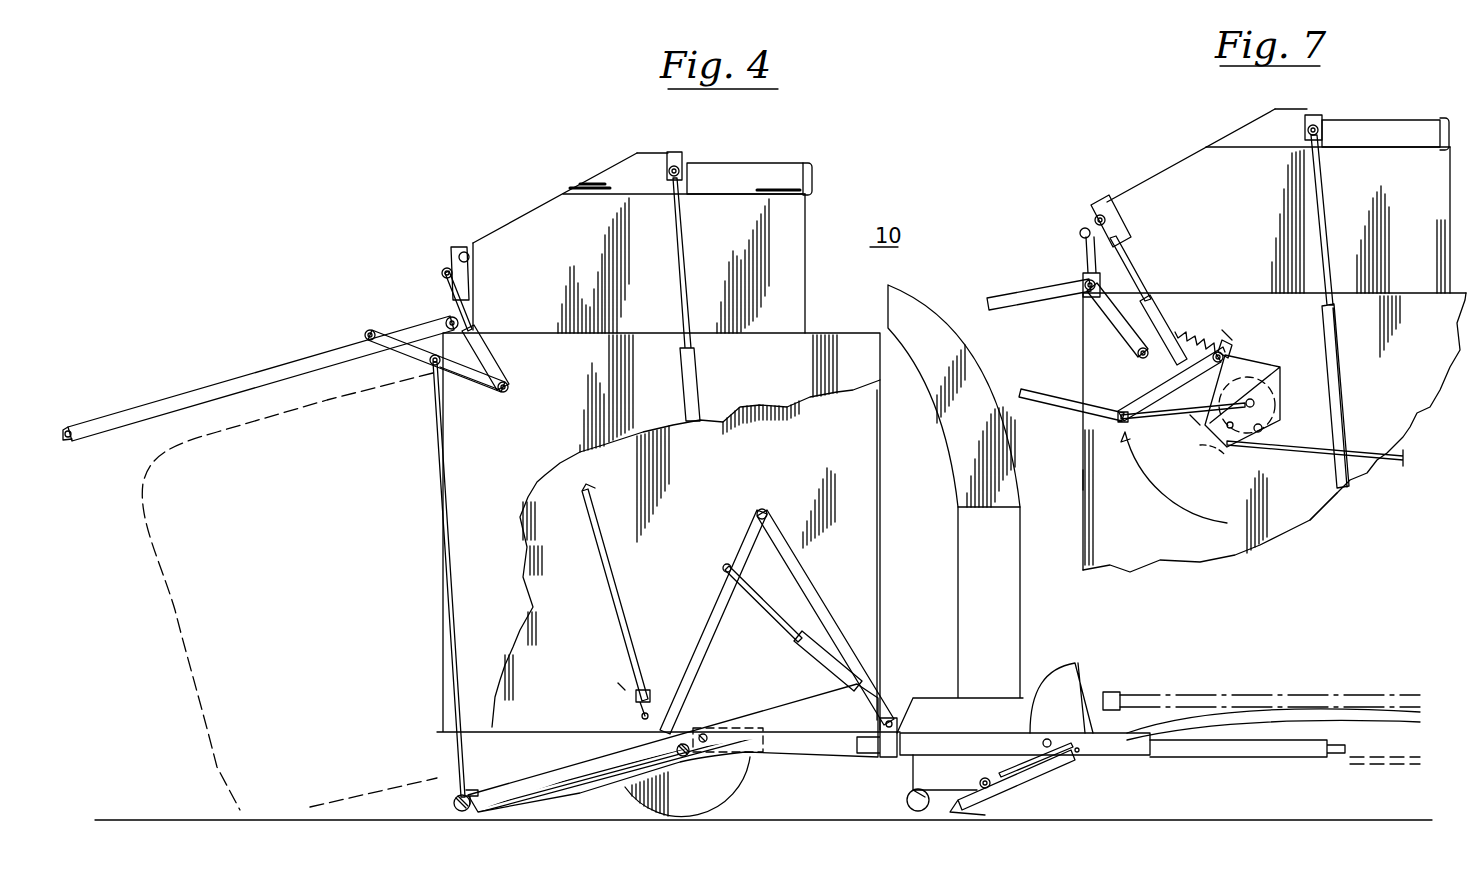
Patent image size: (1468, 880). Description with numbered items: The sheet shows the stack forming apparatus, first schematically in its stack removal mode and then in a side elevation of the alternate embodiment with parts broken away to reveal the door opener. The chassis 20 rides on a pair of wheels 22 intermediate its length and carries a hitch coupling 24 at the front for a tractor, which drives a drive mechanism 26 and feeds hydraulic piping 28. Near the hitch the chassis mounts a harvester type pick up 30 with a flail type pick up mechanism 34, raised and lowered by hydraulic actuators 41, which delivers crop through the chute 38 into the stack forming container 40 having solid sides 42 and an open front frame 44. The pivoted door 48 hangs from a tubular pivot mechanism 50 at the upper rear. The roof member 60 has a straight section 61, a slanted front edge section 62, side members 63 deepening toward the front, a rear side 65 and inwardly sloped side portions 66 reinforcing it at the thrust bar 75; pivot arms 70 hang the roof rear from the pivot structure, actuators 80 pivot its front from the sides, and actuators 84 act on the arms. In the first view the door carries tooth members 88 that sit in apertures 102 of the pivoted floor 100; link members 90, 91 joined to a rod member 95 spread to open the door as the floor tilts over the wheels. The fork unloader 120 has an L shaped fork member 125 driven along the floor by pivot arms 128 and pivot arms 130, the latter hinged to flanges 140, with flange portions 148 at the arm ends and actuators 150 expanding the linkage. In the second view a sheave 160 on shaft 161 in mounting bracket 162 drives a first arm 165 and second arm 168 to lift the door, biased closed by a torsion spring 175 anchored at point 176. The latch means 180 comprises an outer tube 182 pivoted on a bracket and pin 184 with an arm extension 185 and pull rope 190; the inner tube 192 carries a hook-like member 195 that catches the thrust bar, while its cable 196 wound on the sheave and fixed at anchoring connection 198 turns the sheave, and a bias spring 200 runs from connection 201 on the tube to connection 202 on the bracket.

In FIG. 4, the chassis 20 is at (1125, 755).
In FIG. 4, the wheels 22 is at (735, 780).
In FIG. 4, the hitch coupling 24 is at (1355, 748).
In FIG. 4, the drive mechanism 26 is at (1063, 680).
In FIG. 4, the piping 28 is at (1310, 710).
In FIG. 4, the harvester type pick up 30 is at (910, 776).
In FIG. 4, the flail type pick up mechanism 34 is at (1010, 800).
In FIG. 4, the chute 38 is at (1023, 610).
In FIG. 4, the stack forming container 40 is at (408, 637).
In FIG. 7, the stack forming container 40 is at (1072, 493).
In FIG. 4, the hydraulic actuators 41 is at (1055, 768).
In FIG. 4, the sides 42 is at (585, 452).
In FIG. 7, the sides 42 is at (1380, 412).
In FIG. 4, the open front frame 44 is at (888, 470).
In FIG. 4, the pivoted door 48 is at (272, 368).
In FIG. 7, the pivoted door 48 is at (1020, 285).
In FIG. 4, the tubular pivot mechanism 50 is at (447, 322).
In FIG. 7, the tubular pivot mechanism 50 is at (1085, 290).
In FIG. 4, the roof member 60 is at (560, 178).
In FIG. 7, the roof member 60 is at (1183, 140).
In FIG. 4, the straight section 61 is at (528, 210).
In FIG. 7, the straight section 61 is at (1170, 165).
In FIG. 4, the slanted front edge section 62 is at (745, 165).
In FIG. 7, the slanted front edge section 62 is at (1408, 120).
In FIG. 4, the side members 63 is at (773, 220).
In FIG. 7, the side members 63 is at (1430, 224).
In FIG. 4, the rear side 65 is at (447, 300).
In FIG. 4, the inwardly sloped side portions 66 is at (778, 175).
In FIG. 7, the inwardly sloped side portions 66 is at (1378, 130).
In FIG. 4, the pivot arms 70 is at (452, 257).
In FIG. 7, the pivot arms 70 is at (1085, 268).
In FIG. 4, the thrust bar 75 is at (678, 152).
In FIG. 7, the thrust bar 75 is at (1315, 120).
In FIG. 4, the actuators 80 is at (700, 392).
In FIG. 7, the actuators 80 is at (1347, 380).
In FIG. 4, the actuators 84 is at (490, 333).
In FIG. 7, the actuators 84 is at (1113, 318).
In FIG. 4, the tooth members 88 is at (73, 442).
In FIG. 4, the link member 90 is at (400, 352).
In FIG. 4, the link member 91 is at (470, 370).
In FIG. 4, the rod member 95 is at (440, 428).
In FIG. 4, the floor 100 is at (560, 786).
In FIG. 4, the apertures 102 is at (447, 795).
In FIG. 4, the fork unloader 120 is at (609, 686).
In FIG. 4, the L shaped fork member 125 is at (604, 610).
In FIG. 4, the pivot arms 128 is at (740, 525).
In FIG. 4, the pivot arms 130 is at (810, 578).
In FIG. 4, the flanges 140 is at (890, 715).
In FIG. 4, the flange portions 148 is at (635, 722).
In FIG. 4, the actuators 150 is at (810, 655).
In FIG. 7, the sheave 160 is at (1276, 394).
In FIG. 7, the shaft 161 is at (1276, 413).
In FIG. 7, the mounting bracket 162 is at (1260, 372).
In FIG. 7, the first arm 165 is at (1197, 418).
In FIG. 7, the second arm 168 is at (1060, 393).
In FIG. 7, the torsion spring 175 is at (1170, 388).
In FIG. 7, the spring mounting point 176 is at (1228, 355).
In FIG. 7, the latch means 180 is at (1330, 522).
In FIG. 7, the outer tube 182 is at (1172, 320).
In FIG. 7, the bracket and pin 184 is at (1175, 400).
In FIG. 7, the arm extension 185 is at (1220, 455).
In FIG. 7, the pull rope 190 is at (1385, 463).
In FIG. 7, the inner tube 192 is at (1125, 262).
In FIG. 7, the hook-like member 195 is at (1103, 205).
In FIG. 7, the cable 196 is at (1210, 440).
In FIG. 7, the anchoring connection 198 is at (1275, 432).
In FIG. 7, the bias spring 200 is at (1200, 340).
In FIG. 7, the spring connection 201 is at (1175, 335).
In FIG. 7, the spring connection 202 is at (1228, 338).